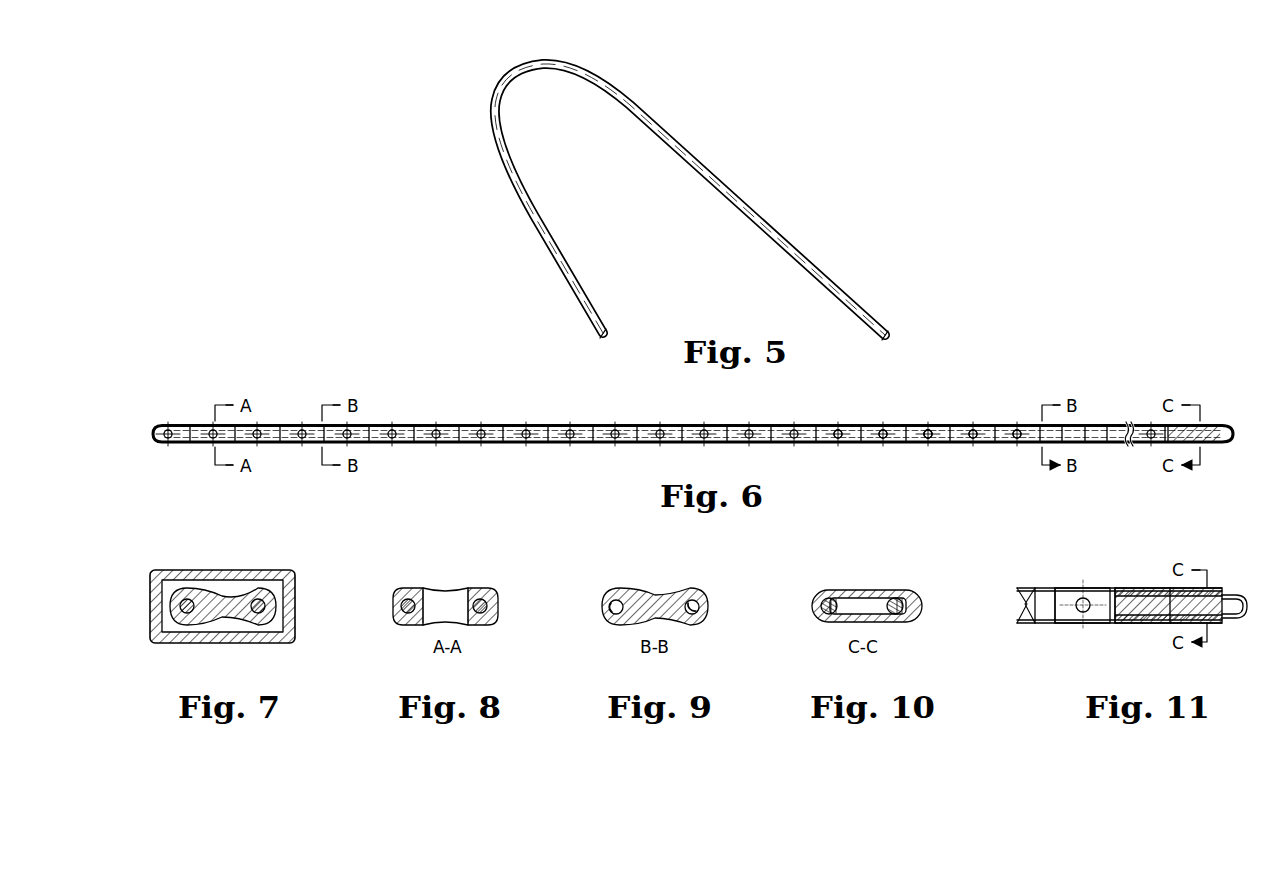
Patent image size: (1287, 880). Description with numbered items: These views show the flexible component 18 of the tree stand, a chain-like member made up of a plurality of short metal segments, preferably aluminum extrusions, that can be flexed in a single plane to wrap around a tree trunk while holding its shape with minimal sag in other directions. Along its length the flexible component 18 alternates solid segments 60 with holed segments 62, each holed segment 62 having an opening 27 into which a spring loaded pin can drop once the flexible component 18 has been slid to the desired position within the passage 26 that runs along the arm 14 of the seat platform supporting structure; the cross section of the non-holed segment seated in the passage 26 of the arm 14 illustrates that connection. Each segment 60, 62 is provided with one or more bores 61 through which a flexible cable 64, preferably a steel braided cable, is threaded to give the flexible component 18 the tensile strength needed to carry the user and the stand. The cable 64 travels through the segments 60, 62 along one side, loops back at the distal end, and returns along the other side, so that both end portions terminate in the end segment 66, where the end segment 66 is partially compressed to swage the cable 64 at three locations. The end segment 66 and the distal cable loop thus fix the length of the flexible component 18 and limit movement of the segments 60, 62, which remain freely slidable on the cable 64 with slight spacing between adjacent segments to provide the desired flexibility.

In FIG. 7, the arm 14 is at (292, 570).
In FIG. 5, the flexible component 18 is at (538, 222).
In FIG. 6, the flexible component 18 is at (580, 444).
In FIG. 7, the passage 26 is at (278, 622).
In FIG. 6, the opening 27 is at (530, 426).
In FIG. 8, the opening 27 is at (460, 598).
In FIG. 11, the opening 27 is at (1080, 612).
In FIG. 6, the segment 60 is at (1040, 426).
In FIG. 7, the segment 60 is at (225, 600).
In FIG. 9, the segment 60 is at (667, 596).
In FIG. 9, the bore 61 is at (700, 598).
In FIG. 6, the holed segment 62 is at (840, 446).
In FIG. 8, the holed segment 62 is at (468, 592).
In FIG. 11, the holed segment 62 is at (1093, 590).
In FIG. 7, the flexible cable 64 is at (258, 604).
In FIG. 8, the flexible cable 64 is at (522, 625).
In FIG. 10, the flexible cable 64 is at (945, 642).
In FIG. 11, the flexible cable 64 is at (1243, 615).
In FIG. 6, the end segment 66 is at (1228, 446).
In FIG. 10, the end segment 66 is at (865, 596).
In FIG. 11, the end segment 66 is at (1133, 590).